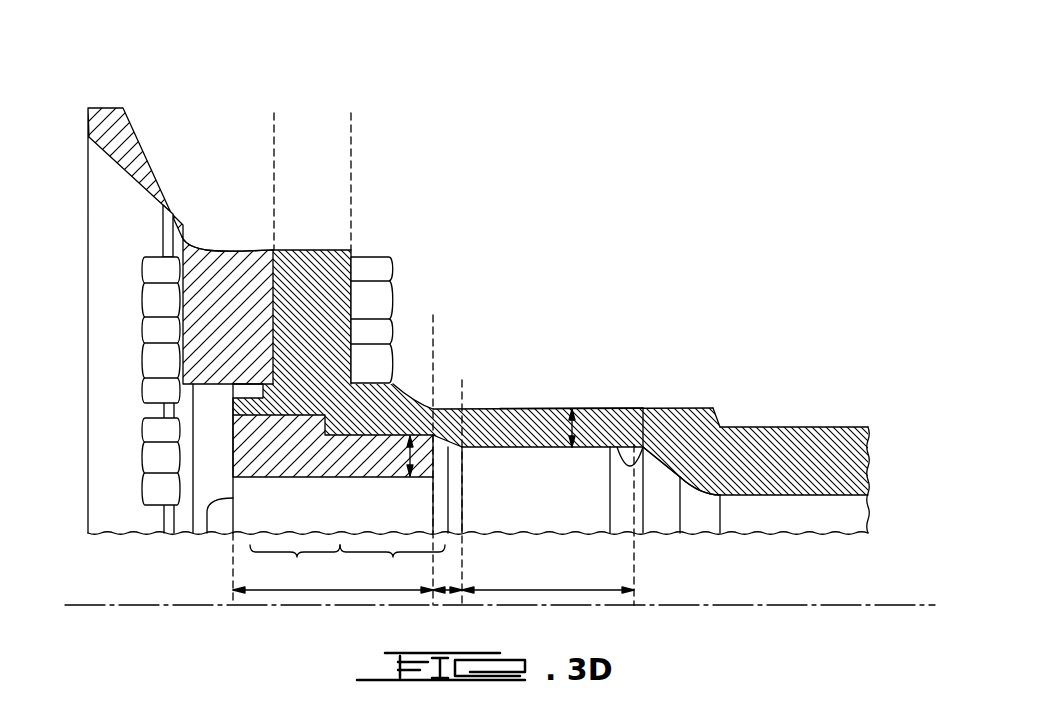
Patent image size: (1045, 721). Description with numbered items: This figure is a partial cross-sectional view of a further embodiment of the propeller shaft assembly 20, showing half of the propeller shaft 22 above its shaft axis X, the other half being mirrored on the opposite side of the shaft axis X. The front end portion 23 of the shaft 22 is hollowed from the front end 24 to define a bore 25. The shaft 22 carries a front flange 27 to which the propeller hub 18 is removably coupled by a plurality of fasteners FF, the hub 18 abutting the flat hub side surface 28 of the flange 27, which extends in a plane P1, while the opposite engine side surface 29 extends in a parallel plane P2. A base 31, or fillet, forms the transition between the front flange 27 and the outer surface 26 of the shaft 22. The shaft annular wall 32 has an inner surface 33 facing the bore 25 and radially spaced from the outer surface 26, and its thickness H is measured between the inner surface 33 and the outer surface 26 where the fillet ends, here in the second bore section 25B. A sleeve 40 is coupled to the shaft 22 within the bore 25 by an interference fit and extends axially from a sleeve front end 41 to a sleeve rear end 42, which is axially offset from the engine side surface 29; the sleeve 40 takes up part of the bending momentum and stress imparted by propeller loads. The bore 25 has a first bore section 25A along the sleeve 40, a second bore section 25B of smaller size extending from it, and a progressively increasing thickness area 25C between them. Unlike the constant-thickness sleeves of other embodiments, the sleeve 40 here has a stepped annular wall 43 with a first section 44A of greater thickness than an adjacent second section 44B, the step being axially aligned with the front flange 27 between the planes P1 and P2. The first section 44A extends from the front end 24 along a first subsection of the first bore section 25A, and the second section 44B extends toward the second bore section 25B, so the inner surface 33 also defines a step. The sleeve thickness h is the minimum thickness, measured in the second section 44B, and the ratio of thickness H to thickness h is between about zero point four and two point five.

The propeller hub 18 is at (98, 105).
The propeller shaft assembly 20 is at (823, 103).
The propeller shaft 22 is at (812, 427).
The front end portion 23 is at (823, 157).
The front end 24 is at (227, 443).
The bore 25 is at (651, 489).
The first bore section 25A is at (340, 592).
The second bore section 25B is at (557, 592).
The progressively increasing thickness area 25C is at (447, 592).
The outer surface 26 is at (655, 408).
The front flange 27 is at (325, 244).
The hub side surface 28 is at (245, 247).
The engine side surface 29 is at (362, 272).
The base 31 is at (432, 402).
The shaft annular wall 32 is at (522, 408).
The inner surface 33 is at (637, 408).
The sleeve 40 is at (237, 477).
The sleeve front end 41 is at (207, 533).
The sleeve rear end 42 is at (617, 458).
The sleeve annular wall 43 is at (557, 478).
The first section 44A is at (295, 566).
The second section 44B is at (392, 566).
The fasteners FF is at (148, 372).
The plane P1 is at (274, 113).
The plane P2 is at (351, 113).
The wall thickness H is at (562, 408).
The thickness h is at (409, 478).
The shaft axis X is at (906, 600).